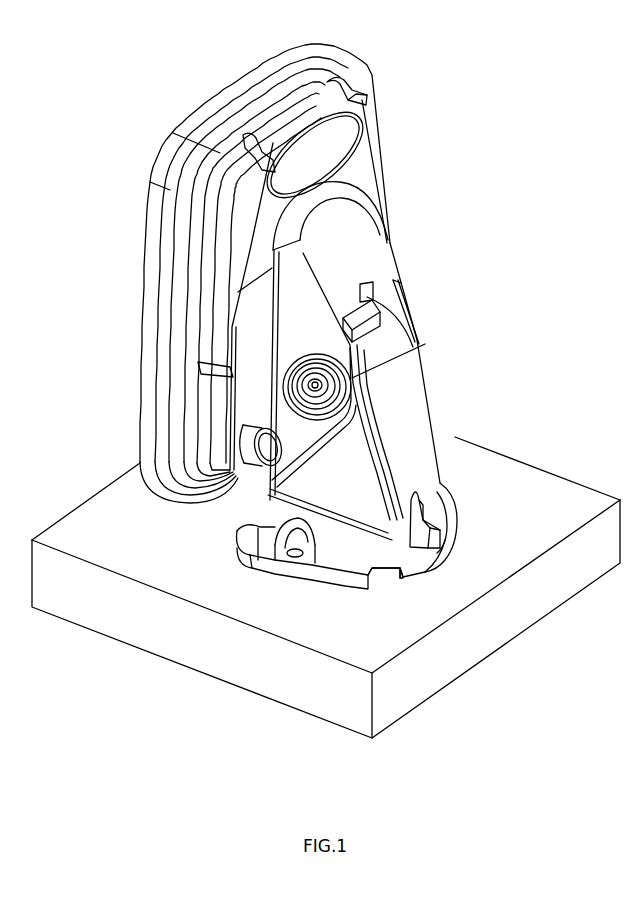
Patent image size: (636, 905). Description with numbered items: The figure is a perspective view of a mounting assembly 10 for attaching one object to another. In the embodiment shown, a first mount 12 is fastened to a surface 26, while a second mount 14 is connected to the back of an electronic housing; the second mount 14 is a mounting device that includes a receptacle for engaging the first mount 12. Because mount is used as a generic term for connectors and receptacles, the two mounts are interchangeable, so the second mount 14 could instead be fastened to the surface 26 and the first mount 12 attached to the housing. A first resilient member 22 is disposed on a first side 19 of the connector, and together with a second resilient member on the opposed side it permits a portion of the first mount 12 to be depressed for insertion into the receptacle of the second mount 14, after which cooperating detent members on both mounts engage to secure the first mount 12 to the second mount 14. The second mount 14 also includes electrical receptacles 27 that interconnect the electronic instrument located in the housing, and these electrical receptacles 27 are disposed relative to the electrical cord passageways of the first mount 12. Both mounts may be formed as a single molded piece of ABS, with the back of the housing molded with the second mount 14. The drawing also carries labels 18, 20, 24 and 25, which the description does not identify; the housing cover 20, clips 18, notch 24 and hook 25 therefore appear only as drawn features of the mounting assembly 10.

The mounting assembly 10 is at (500, 180).
The first mount 12 is at (423, 457).
The second mount 14 is at (343, 219).
The snap clips 18 is at (347, 347).
The first side 19 is at (347, 497).
The housing cover 20 is at (330, 55).
The first resilient member 22 is at (340, 478).
The notch 24 is at (357, 580).
The hook 25 is at (387, 573).
The surface 26 is at (522, 525).
The electrical receptacles 27 is at (253, 455).